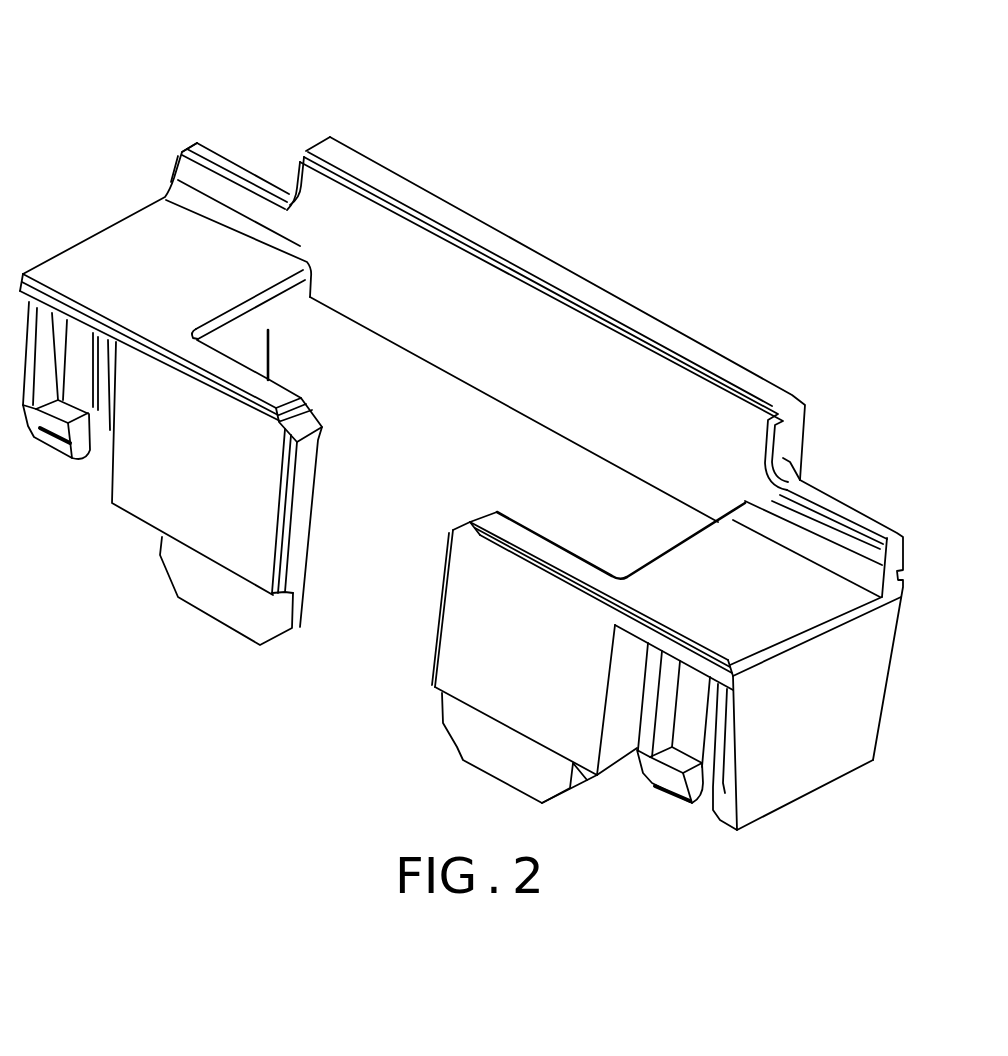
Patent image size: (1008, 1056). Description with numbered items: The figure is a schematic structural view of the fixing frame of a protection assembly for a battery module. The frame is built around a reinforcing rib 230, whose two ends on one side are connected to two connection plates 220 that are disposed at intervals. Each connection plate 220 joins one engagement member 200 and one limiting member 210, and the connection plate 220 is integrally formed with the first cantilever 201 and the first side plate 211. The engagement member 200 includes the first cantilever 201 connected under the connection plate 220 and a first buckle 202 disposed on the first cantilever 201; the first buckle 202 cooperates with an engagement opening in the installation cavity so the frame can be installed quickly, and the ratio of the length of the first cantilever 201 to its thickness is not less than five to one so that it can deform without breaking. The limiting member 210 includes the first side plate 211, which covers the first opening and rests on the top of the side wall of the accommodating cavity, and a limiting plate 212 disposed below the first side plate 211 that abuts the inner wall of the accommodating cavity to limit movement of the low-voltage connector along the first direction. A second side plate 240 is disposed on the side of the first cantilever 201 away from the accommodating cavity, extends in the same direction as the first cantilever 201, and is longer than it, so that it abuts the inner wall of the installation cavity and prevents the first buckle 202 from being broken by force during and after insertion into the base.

The engagement member 200 is at (209, 328).
The first cantilever 201 is at (73, 365).
The first buckle 202 is at (63, 437).
The limiting member 210 is at (288, 46).
The first side plate 211 is at (183, 487).
The limiting plate 212 is at (228, 603).
The connection plate 220 is at (666, 552).
The reinforcing rib 230 is at (462, 327).
The second side plate 240 is at (755, 723).